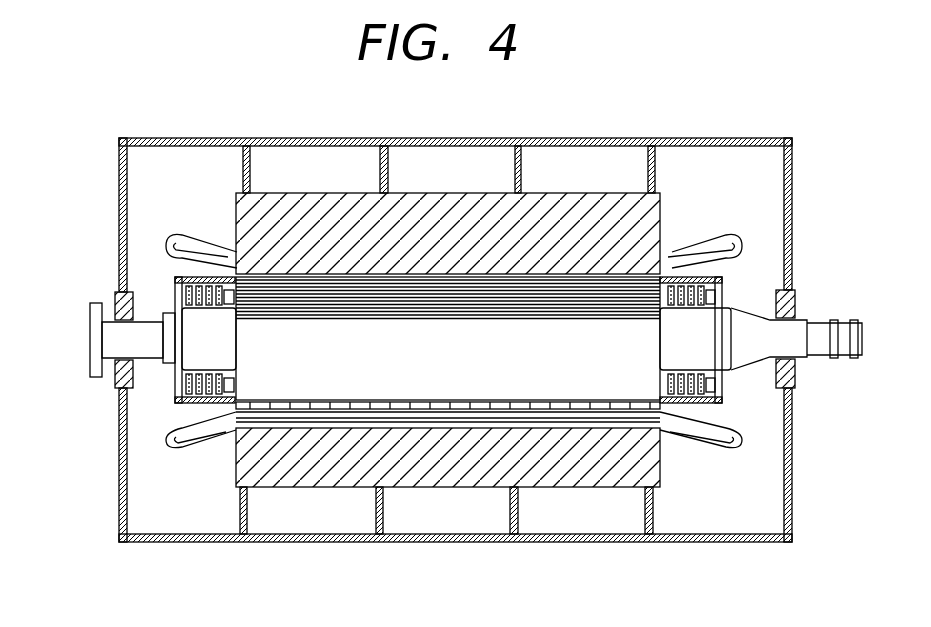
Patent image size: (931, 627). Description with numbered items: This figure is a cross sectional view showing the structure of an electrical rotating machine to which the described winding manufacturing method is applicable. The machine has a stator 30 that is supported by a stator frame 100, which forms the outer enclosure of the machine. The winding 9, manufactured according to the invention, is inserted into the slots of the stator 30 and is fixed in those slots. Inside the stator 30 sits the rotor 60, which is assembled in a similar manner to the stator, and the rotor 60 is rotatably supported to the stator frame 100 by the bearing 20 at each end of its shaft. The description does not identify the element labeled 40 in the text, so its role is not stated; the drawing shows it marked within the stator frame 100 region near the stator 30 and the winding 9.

The stator frame 100 is at (205, 542).
The stator 40 is at (415, 370).
The stator 30 is at (562, 472).
The winding 9 is at (628, 423).
The rotor 60 is at (350, 378).
The bearing 20 is at (115, 292).